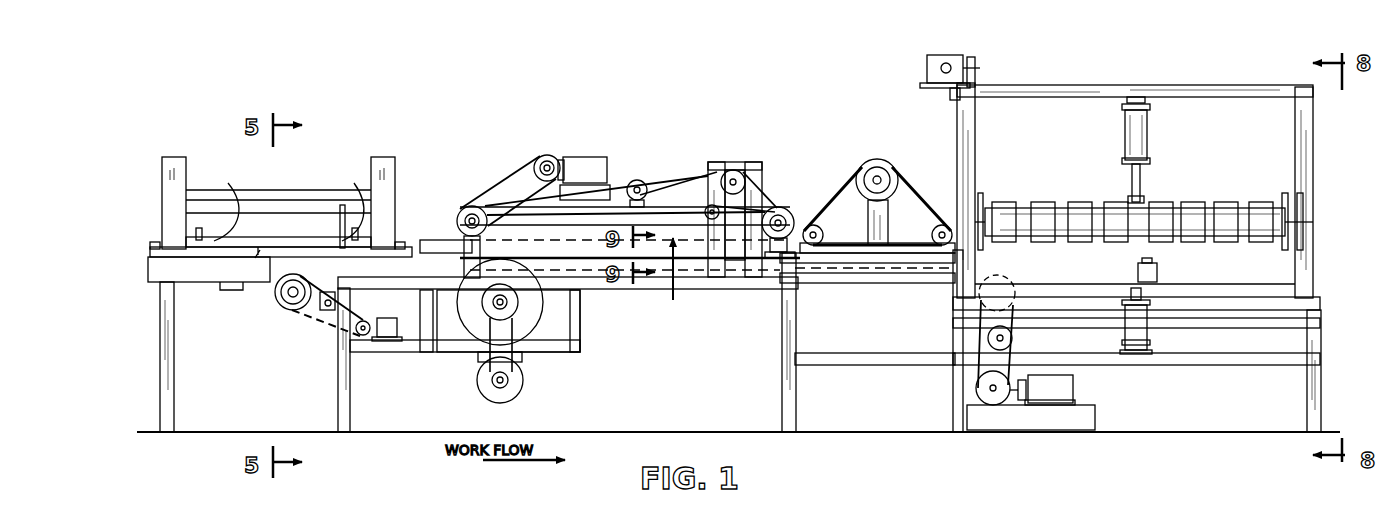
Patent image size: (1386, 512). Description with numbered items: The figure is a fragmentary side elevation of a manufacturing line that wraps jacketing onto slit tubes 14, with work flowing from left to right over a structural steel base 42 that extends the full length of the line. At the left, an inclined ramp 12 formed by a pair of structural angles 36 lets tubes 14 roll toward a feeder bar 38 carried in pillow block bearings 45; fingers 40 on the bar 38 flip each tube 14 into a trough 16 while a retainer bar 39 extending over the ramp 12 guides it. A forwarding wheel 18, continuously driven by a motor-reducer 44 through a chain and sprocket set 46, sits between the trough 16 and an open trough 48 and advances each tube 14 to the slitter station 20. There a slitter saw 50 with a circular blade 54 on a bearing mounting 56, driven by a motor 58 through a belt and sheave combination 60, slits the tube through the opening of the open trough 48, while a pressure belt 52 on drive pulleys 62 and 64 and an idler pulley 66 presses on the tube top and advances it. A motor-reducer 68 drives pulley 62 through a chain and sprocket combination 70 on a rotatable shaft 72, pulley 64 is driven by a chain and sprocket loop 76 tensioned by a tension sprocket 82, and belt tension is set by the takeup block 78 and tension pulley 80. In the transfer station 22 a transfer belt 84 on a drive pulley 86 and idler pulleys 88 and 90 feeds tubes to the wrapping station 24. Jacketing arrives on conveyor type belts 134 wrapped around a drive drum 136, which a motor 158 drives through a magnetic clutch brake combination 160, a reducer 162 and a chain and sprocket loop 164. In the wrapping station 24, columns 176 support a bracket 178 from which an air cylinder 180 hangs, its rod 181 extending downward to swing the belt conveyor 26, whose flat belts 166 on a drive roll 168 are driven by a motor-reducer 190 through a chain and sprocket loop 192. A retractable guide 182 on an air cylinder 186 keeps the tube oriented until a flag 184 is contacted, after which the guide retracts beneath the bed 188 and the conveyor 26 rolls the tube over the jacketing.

The inclined ramp 12 is at (284, 92).
The tube 14 is at (267, 227).
The trough 16 is at (165, 275).
The forwarding wheel 18 is at (290, 310).
The slitter station 20 is at (620, 92).
The transfer station 22 is at (872, 92).
The wrapping station 24 is at (1134, 67).
The swingable belt conveyor 26 is at (1092, 190).
The structural angles 36 is at (178, 157).
The feeder bar 38 is at (258, 256).
The retainer bar 39 is at (340, 205).
The fingers 40 is at (283, 200).
The base 42 is at (150, 371).
The motor-reducer 44 is at (385, 341).
The pillow block bearings 45 is at (160, 241).
The chain and sprocket set 46 is at (366, 316).
The open trough 48 is at (413, 258).
The slitter saw 50 is at (542, 307).
The pressure belt 52 is at (690, 190).
The circular blade 54 is at (545, 297).
The bearing mounting 56 is at (477, 330).
The motor 58 is at (520, 393).
The belt and sheave combination 60 is at (518, 334).
The drive pulley 62 is at (470, 207).
The drive pulley 64 is at (780, 208).
The idler pulley 66 is at (735, 170).
The motor-reducer 68 is at (582, 158).
The chain and sprocket combination 70 is at (512, 168).
The rotatable shaft 72 is at (480, 210).
The chain and sprocket loop 76 is at (670, 278).
The takeup block 78 is at (760, 175).
The tension pulley 80 is at (637, 180).
The tension sprocket 82 is at (708, 210).
The transfer belt 84 is at (912, 190).
The drive pulley 86 is at (877, 159).
The idler pulley 88 is at (813, 224).
The idler pulley 90 is at (942, 224).
The conveyor type belts 134 is at (1318, 273).
The drive drum 136 is at (1015, 320).
The motor 158 is at (1060, 402).
The magnetic clutch brake combination 160 is at (1022, 395).
The reducer 162 is at (1008, 405).
The chain and sprocket loop 164 is at (975, 340).
The flat belts 166 is at (1075, 203).
The drive roll 168 is at (1243, 241).
The columns 176 is at (957, 130).
The bracket 178 is at (1180, 85).
The air cylinder 180 is at (1147, 128).
The piston rod 181 is at (1140, 180).
The retractable guide 182 is at (1062, 277).
The flag 184 is at (1157, 268).
The air cylinder 186 is at (1148, 325).
The bed 188 is at (1228, 292).
The motor-reducer 190 is at (950, 55).
The chain and sprocket loop 192 is at (975, 130).